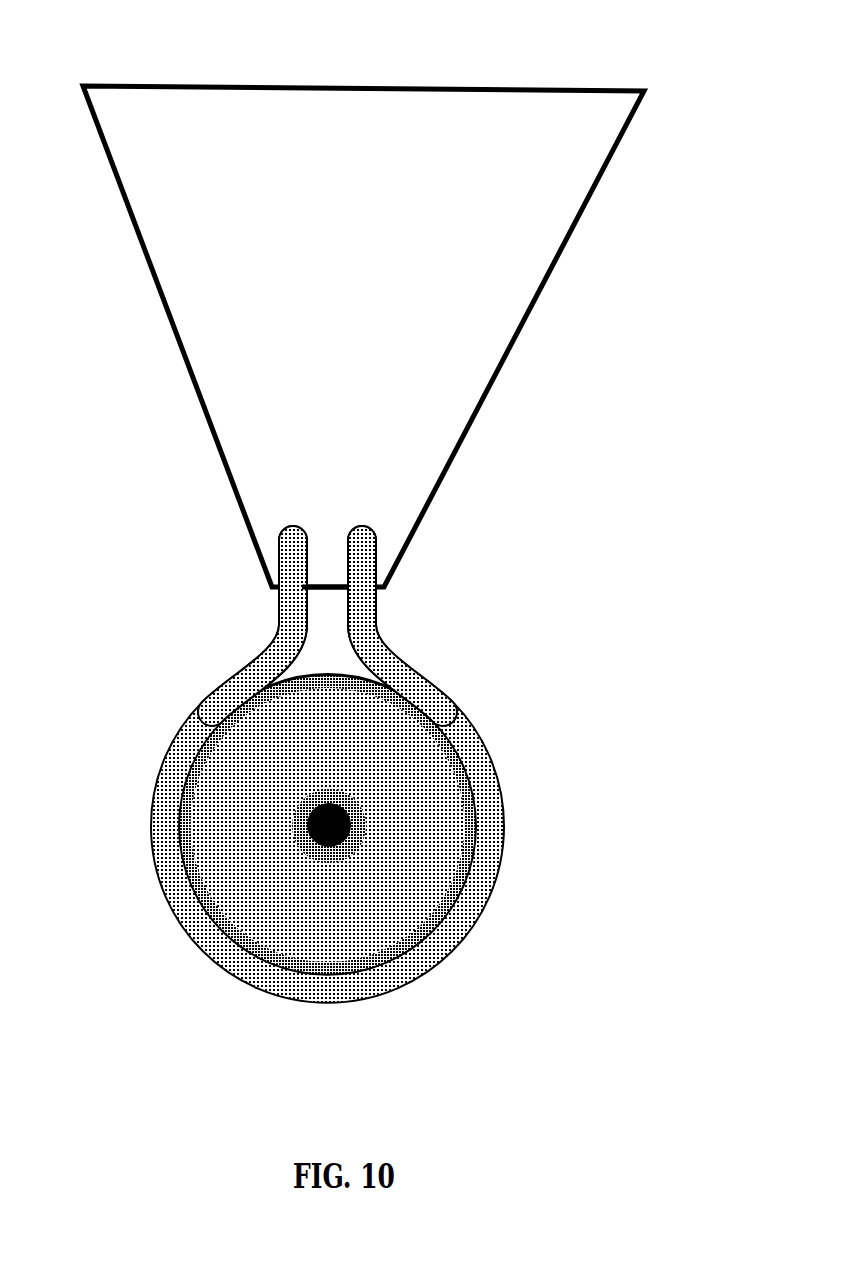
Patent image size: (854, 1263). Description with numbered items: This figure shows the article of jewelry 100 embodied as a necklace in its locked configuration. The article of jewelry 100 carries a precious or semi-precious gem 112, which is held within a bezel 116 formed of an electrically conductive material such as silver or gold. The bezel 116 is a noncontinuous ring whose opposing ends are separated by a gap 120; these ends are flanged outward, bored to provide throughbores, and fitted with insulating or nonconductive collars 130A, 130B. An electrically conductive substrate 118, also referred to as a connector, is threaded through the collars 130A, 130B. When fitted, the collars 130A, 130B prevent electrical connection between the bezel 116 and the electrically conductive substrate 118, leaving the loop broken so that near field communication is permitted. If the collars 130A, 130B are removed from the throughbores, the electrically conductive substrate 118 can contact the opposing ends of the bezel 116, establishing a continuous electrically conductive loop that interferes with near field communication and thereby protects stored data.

The article of jewelry 100 is at (767, 50).
The precious or semi-precious gem 112 is at (202, 820).
The bezel 116 is at (477, 738).
The electrically conductive substrate 118 is at (497, 375).
The gap 120 is at (345, 530).
The insulating collar 130A is at (275, 604).
The insulating collar 130B is at (383, 605).